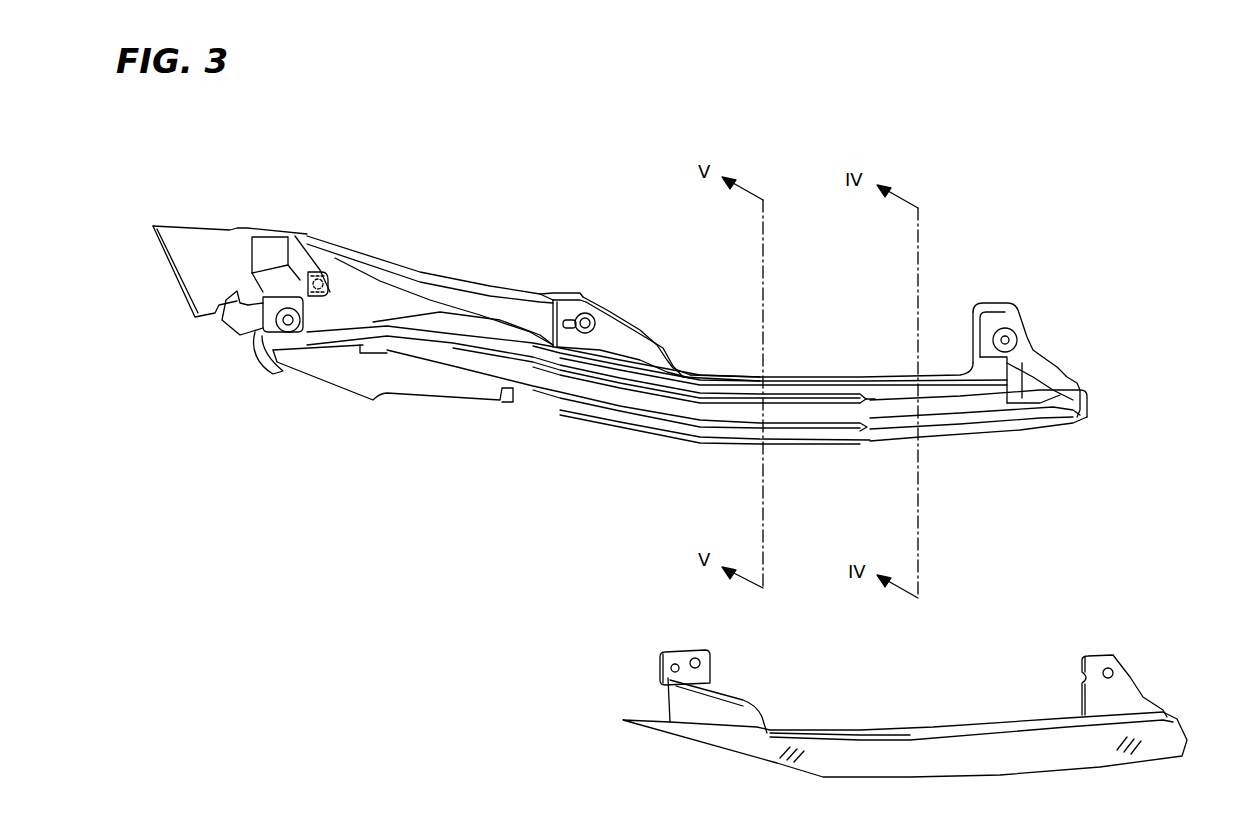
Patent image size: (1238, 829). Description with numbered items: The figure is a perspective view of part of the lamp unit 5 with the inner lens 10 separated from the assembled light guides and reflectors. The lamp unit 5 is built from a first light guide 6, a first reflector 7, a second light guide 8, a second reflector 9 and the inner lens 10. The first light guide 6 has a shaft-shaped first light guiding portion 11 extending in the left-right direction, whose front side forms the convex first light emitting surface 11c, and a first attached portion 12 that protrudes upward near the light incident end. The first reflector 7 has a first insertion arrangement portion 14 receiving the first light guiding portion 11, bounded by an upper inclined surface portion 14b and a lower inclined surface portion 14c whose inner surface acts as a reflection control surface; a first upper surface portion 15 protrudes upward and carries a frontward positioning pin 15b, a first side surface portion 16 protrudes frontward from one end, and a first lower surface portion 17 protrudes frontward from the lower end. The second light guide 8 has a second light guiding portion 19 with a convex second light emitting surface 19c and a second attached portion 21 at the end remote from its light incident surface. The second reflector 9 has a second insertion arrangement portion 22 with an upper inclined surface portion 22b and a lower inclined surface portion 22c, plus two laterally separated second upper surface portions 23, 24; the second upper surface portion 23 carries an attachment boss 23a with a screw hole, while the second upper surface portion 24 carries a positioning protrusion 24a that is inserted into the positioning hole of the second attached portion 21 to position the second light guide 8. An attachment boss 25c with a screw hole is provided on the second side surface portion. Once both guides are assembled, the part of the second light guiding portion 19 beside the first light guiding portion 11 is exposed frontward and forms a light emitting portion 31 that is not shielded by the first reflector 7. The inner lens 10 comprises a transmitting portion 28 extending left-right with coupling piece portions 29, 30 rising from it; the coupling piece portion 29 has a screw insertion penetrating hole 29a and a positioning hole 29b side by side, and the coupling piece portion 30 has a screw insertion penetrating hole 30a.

The lamp unit 5 is at (1102, 176).
The first light guide 6 is at (604, 402).
The first reflector 7 is at (666, 422).
The second light guide 8 is at (882, 400).
The second reflector 9 is at (936, 372).
The inner lens 10 is at (950, 730).
The first light guiding portion 11 is at (714, 408).
The first light emitting surface 11c is at (745, 420).
The first attached portion 12 is at (325, 288).
The first insertion arrangement portion 14 is at (781, 440).
The upper inclined surface portion 14b is at (783, 388).
The lower inclined surface portion 14c is at (806, 432).
The first upper surface portion 15 is at (624, 338).
The positioning pin 15b is at (568, 322).
The first side surface portion 16 is at (302, 272).
The first lower surface portion 17 is at (396, 388).
The second light guiding portion 19 is at (893, 400).
The second light emitting surface 19c is at (868, 412).
The second attached portion 21 is at (1030, 330).
The second insertion arrangement portion 22 is at (970, 432).
The upper inclined surface portion 22b is at (866, 392).
The lower inclined surface portion 22c is at (930, 438).
The second upper surface portion 23 is at (568, 290).
The attachment boss 23a is at (604, 316).
The second upper surface portion 24 is at (980, 302).
The positioning protrusion 24a is at (1010, 336).
The attachment boss 25c is at (325, 292).
The transmitting portion 28 is at (912, 735).
The coupling piece portion 29 is at (736, 703).
The screw insertion penetrating hole 29a is at (703, 663).
The positioning hole 29b is at (675, 664).
The coupling piece portion 30 is at (1108, 657).
The screw insertion penetrating hole 30a is at (1114, 673).
The light emitting portion 31 is at (1005, 400).